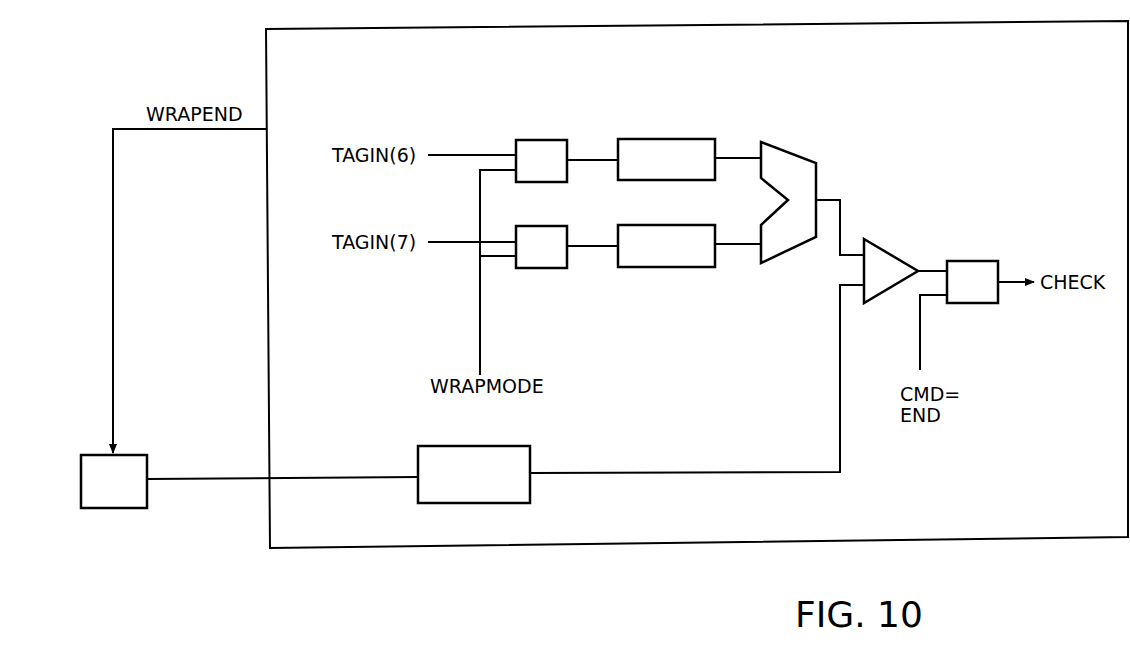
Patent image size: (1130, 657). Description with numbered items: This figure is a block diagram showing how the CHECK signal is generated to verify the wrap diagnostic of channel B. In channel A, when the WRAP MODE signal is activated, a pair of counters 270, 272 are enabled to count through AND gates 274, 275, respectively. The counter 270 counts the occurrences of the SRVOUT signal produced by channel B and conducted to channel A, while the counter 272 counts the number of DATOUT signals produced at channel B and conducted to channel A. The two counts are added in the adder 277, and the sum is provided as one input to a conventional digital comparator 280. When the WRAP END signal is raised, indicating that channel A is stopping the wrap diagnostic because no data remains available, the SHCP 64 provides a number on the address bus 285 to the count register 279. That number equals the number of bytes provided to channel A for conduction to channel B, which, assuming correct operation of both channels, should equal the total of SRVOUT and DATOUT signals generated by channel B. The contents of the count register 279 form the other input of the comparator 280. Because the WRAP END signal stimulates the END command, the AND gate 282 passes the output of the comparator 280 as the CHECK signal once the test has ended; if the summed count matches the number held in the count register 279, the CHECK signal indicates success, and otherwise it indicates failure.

The SHCP 64 is at (135, 452).
The counter 270 is at (703, 139).
The counter 272 is at (700, 225).
The AND gate 274 is at (548, 140).
The AND gate 275 is at (548, 226).
The adder 277 is at (797, 157).
The count register 279 is at (518, 446).
The digital comparator 280 is at (883, 248).
The AND gate 282 is at (970, 261).
The address bus 285 is at (223, 481).